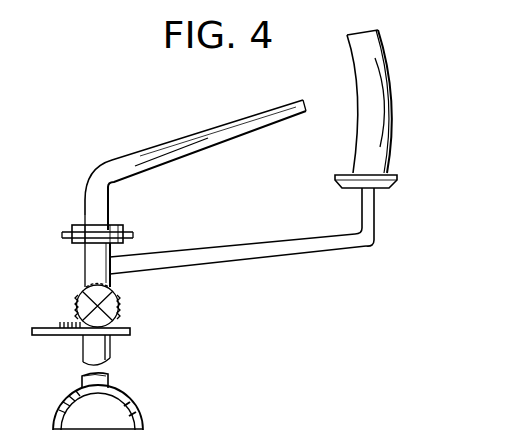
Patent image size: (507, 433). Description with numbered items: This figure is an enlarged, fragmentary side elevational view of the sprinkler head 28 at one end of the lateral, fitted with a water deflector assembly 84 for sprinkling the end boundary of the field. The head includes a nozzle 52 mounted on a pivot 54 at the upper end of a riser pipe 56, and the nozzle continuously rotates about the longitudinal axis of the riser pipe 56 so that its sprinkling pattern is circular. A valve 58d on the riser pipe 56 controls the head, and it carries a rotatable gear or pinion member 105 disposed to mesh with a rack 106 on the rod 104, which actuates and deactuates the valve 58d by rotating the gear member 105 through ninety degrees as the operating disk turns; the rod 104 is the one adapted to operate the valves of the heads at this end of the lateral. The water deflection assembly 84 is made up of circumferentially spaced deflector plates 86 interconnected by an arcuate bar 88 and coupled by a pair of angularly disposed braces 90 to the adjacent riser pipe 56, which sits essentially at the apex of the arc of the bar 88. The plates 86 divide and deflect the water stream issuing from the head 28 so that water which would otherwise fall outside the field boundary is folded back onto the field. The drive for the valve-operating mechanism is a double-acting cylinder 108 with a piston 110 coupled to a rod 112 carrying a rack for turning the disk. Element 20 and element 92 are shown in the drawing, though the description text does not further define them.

The pressure pad housing 20 is at (130, 397).
The sprinkler head 28 is at (138, 148).
The nozzle 52 is at (233, 121).
The pivot 54 is at (133, 234).
The riser pipe 56 is at (86, 268).
The valve 58d is at (120, 318).
The water deflection assembly 84 is at (400, 126).
The deflector plates 86 is at (382, 60).
The arcuate bar 88 is at (374, 218).
The braces 90 is at (299, 254).
The base member 92 is at (197, 432).
The rod 104 is at (48, 340).
The gear member 105 is at (118, 300).
The rack 106 is at (70, 320).
The double-acting cylinder 108 is at (396, 432).
The piston 110 is at (338, 432).
The rod 112 is at (280, 432).